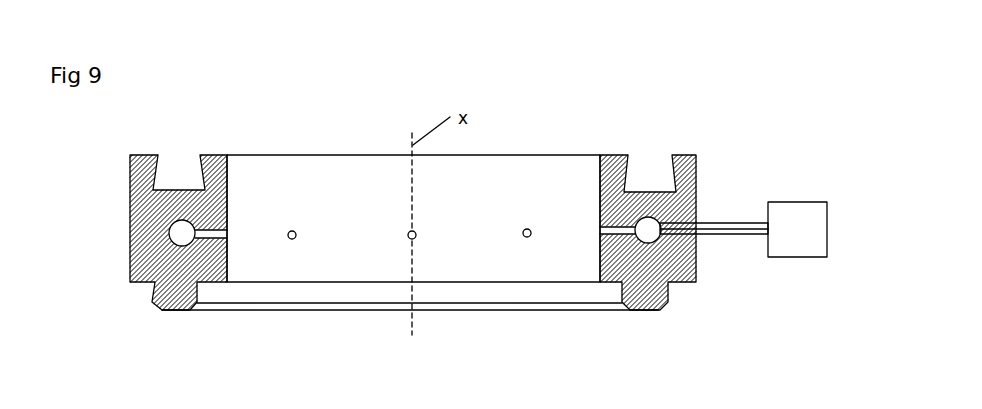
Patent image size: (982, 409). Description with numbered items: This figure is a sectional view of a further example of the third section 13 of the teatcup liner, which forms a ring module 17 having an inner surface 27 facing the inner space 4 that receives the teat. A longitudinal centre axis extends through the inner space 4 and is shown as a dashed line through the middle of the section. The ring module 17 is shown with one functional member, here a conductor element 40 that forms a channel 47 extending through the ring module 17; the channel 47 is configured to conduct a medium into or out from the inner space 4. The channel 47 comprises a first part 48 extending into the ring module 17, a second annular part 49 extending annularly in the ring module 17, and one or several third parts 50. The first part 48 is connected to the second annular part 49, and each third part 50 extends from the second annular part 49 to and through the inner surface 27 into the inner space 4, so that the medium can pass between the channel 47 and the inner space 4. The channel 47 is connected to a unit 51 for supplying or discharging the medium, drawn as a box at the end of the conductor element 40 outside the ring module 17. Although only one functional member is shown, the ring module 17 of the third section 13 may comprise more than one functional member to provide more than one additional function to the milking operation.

The inner space 4 is at (376, 198).
The third section 13 is at (138, 232).
The ring module 17 is at (137, 245).
The inner surface 27 is at (227, 198).
The conductor element 40 is at (719, 224).
The channel 47 is at (719, 280).
The first part 48 is at (749, 233).
The second annular part 49 is at (647, 228).
The third part 50 is at (409, 238).
The unit 51 is at (803, 248).